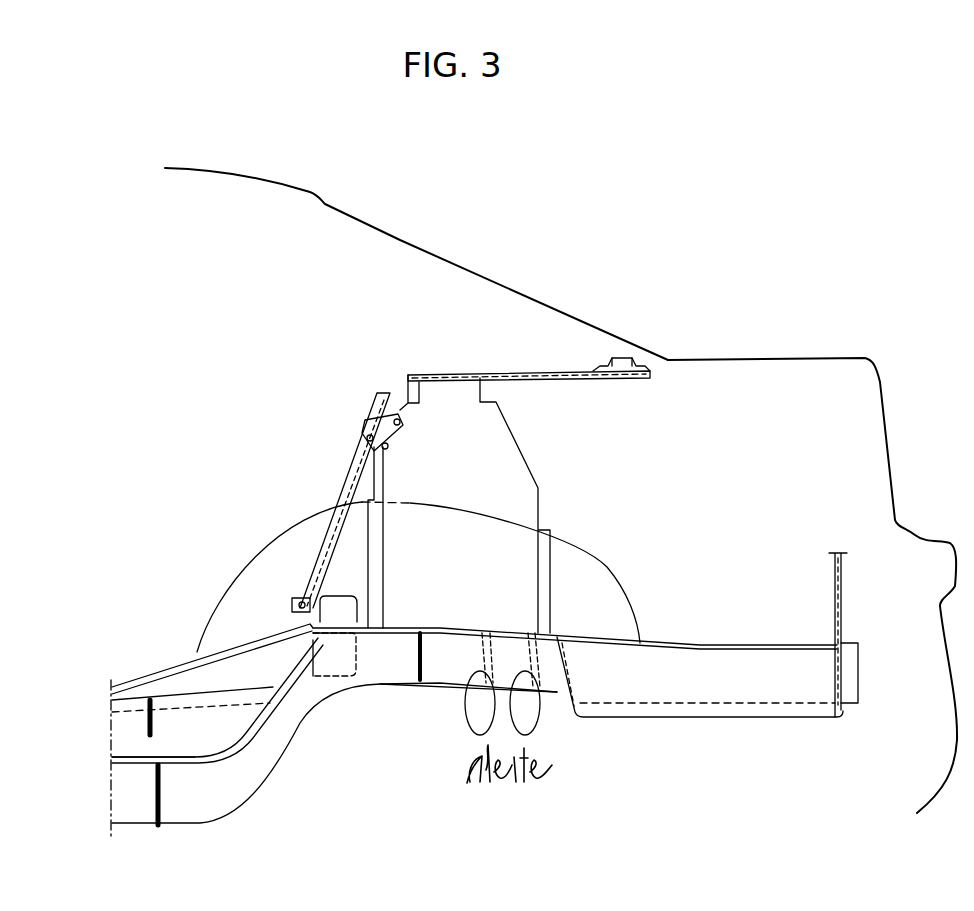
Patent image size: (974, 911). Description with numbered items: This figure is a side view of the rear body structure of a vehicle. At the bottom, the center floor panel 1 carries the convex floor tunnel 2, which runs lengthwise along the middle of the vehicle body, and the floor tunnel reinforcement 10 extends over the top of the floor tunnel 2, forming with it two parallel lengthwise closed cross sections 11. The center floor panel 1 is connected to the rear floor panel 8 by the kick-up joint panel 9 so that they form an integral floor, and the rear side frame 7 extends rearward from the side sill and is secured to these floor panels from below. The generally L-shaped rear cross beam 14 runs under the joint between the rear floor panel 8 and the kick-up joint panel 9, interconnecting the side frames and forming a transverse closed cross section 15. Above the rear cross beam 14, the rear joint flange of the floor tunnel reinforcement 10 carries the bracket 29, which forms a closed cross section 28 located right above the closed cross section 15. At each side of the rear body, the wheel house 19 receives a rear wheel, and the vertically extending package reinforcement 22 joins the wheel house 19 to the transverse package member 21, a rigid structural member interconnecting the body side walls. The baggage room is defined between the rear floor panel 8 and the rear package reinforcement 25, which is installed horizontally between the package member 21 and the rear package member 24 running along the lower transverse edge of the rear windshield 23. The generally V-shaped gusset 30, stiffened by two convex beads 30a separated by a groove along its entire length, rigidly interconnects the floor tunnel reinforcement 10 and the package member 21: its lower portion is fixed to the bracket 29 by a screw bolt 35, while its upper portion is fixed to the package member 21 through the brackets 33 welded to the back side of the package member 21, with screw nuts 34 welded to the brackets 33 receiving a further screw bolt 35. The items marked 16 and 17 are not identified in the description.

The center floor panel 1 is at (122, 758).
The floor tunnel 2 is at (118, 720).
The rear side frame 7 is at (447, 674).
The rear floor panel 8 is at (450, 626).
The kick-up joint panel 9 is at (241, 745).
The floor tunnel reinforcement 10 is at (192, 666).
The closed cross sections 11 is at (156, 688).
The rear cross beam 14 is at (351, 666).
The closed cross section 15 is at (313, 661).
The bracket 16 is at (487, 686).
The bracket 17 is at (533, 689).
The wheel house 19 is at (603, 566).
The package member 21 is at (419, 402).
The package reinforcement 22 is at (522, 450).
The rear windshield 23 is at (447, 263).
The rear package member 24 is at (621, 359).
The rear package reinforcement 25 is at (478, 374).
The closed cross section 28 is at (340, 612).
The bracket 29 is at (345, 596).
The V-shaped gusset 30 is at (325, 500).
The convex beads 30a is at (341, 501).
The brackets 33 is at (388, 448).
The screw nuts 34 is at (401, 423).
The screw bolt 35 is at (368, 426).